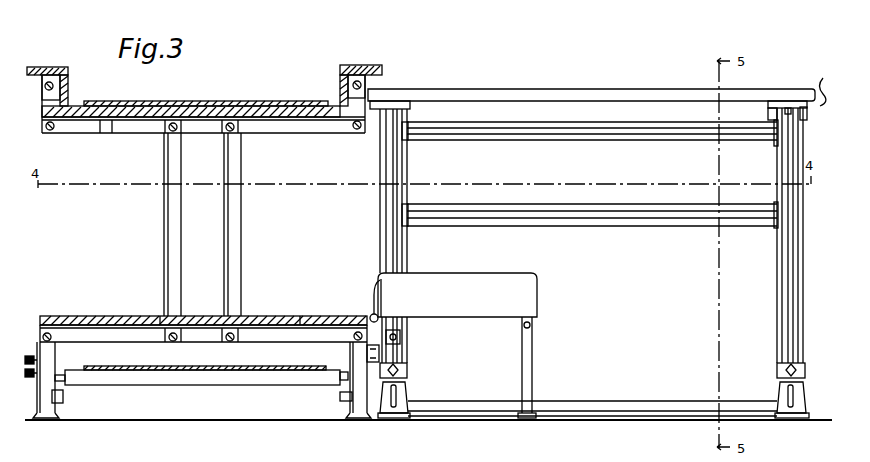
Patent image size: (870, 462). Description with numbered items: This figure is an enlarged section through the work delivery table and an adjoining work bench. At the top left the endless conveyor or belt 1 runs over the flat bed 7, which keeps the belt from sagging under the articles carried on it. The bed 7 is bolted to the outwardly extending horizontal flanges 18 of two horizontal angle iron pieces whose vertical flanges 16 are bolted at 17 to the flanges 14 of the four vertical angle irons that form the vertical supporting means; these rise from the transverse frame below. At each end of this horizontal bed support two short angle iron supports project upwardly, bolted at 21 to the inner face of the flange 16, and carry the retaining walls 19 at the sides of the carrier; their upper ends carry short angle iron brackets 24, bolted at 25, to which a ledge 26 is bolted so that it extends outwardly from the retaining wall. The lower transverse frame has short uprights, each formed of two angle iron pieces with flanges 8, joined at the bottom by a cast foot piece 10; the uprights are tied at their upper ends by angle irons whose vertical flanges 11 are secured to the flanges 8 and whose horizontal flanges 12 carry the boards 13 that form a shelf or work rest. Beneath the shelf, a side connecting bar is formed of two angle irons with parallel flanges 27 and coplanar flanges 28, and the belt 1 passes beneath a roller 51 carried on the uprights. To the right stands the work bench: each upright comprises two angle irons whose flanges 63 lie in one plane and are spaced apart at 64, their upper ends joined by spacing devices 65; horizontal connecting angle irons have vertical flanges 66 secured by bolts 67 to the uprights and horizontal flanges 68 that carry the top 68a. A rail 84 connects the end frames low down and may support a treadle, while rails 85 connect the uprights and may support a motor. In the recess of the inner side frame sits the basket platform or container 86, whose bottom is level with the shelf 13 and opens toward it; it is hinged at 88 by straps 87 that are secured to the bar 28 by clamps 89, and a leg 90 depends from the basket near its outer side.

The endless conveyor or belt 1 is at (218, 101).
The flat bed 7 is at (290, 106).
The flange of angle iron piece 8 is at (367, 352).
The cast foot piece 10 is at (357, 420).
The vertical flange of horizontal support 11 is at (262, 341).
The horizontal flange 12 is at (320, 316).
The boards 13 is at (282, 316).
The flange of vertical angle iron 14 is at (243, 240).
The vertical flange of horizontal bed support 16 is at (287, 134).
The bolts 17 is at (170, 132).
The horizontal flange of bed support 18 is at (110, 133).
The retaining walls 19 is at (69, 85).
The bolts 21 is at (52, 132).
The angle iron brackets 24 is at (47, 67).
The bolts 25 is at (50, 82).
The ledge 26 is at (40, 67).
The flange of connecting bar angle iron 27 is at (33, 356).
The flange of connecting bar angle iron 28 is at (40, 375).
The roller 51 is at (172, 386).
The flange of upright angle iron 63 is at (777, 340).
The space between flanges 64 is at (796, 312).
The spacing devices 65 is at (410, 110).
The vertical flange of horizontal connecting means 66 is at (772, 108).
The bolt 67 is at (806, 115).
The horizontal flange 68 is at (786, 108).
The top 68a is at (598, 89).
The connecting bar or rail 84 is at (628, 401).
The rails 85 is at (640, 136).
The basket platform or container 86 is at (537, 300).
The straps 87 is at (400, 337).
The hinge 88 is at (373, 313).
The clamps 89 is at (407, 370).
The leg 90 is at (533, 380).